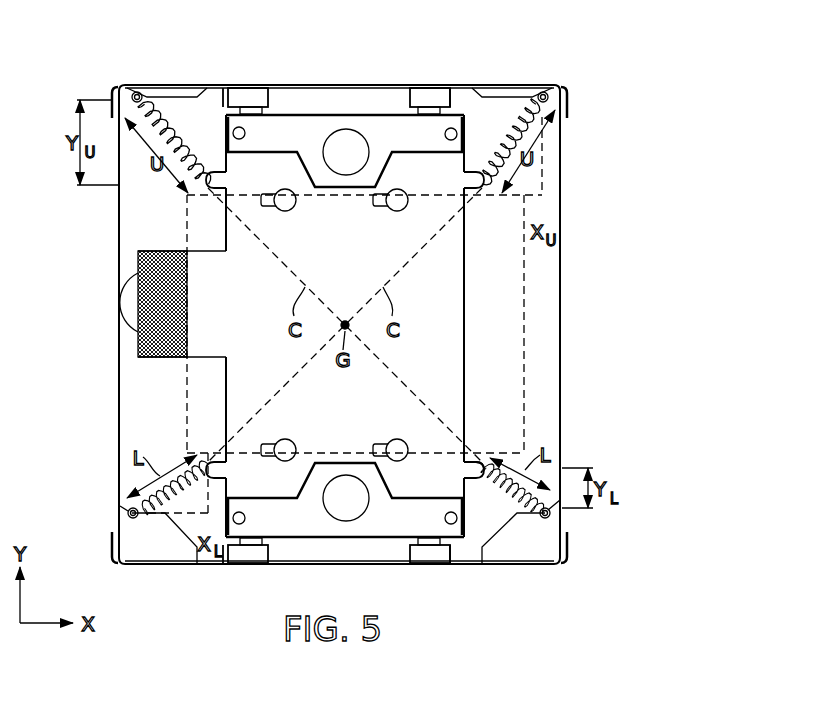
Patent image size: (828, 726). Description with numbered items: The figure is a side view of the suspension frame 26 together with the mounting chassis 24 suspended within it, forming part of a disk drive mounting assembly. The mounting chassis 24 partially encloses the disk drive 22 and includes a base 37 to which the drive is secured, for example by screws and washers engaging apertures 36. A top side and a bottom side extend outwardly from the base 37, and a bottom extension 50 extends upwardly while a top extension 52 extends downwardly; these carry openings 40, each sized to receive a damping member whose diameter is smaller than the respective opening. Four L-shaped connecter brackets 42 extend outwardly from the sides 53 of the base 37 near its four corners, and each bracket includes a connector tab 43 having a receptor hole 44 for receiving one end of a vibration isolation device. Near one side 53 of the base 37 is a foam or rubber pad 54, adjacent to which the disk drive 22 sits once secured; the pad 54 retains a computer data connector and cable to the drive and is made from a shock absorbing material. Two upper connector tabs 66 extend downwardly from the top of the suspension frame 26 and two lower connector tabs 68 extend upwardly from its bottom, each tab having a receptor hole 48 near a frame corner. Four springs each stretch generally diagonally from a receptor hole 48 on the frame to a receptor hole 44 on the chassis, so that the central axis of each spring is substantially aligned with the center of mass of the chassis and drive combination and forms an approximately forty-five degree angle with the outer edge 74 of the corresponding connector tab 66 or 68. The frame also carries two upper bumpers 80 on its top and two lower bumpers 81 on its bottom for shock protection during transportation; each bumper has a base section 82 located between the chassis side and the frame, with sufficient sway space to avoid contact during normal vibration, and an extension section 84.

The disk drive 22 is at (525, 269).
The mounting chassis 24 is at (349, 103).
The suspension frame 26 is at (582, 80).
The apertures 36 is at (284, 211).
The base 37 is at (207, 263).
The openings 40 is at (345, 168).
The L-shaped connecter brackets 42 is at (224, 118).
The connector tab 43 is at (478, 458).
The receptor hole 44 is at (207, 172).
The receptor hole 48 is at (134, 91).
The bottom extension 50 is at (304, 530).
The top extension 52 is at (305, 146).
The sides 53 is at (465, 380).
The pad 54 is at (138, 258).
The upper connector tabs 66 is at (172, 88).
The lower connector tabs 68 is at (145, 564).
The outer edge 74 is at (112, 96).
The upper bumpers 80 is at (223, 90).
The lower bumpers 81 is at (223, 560).
The base section 82 is at (250, 88).
The extension section 84 is at (268, 103).